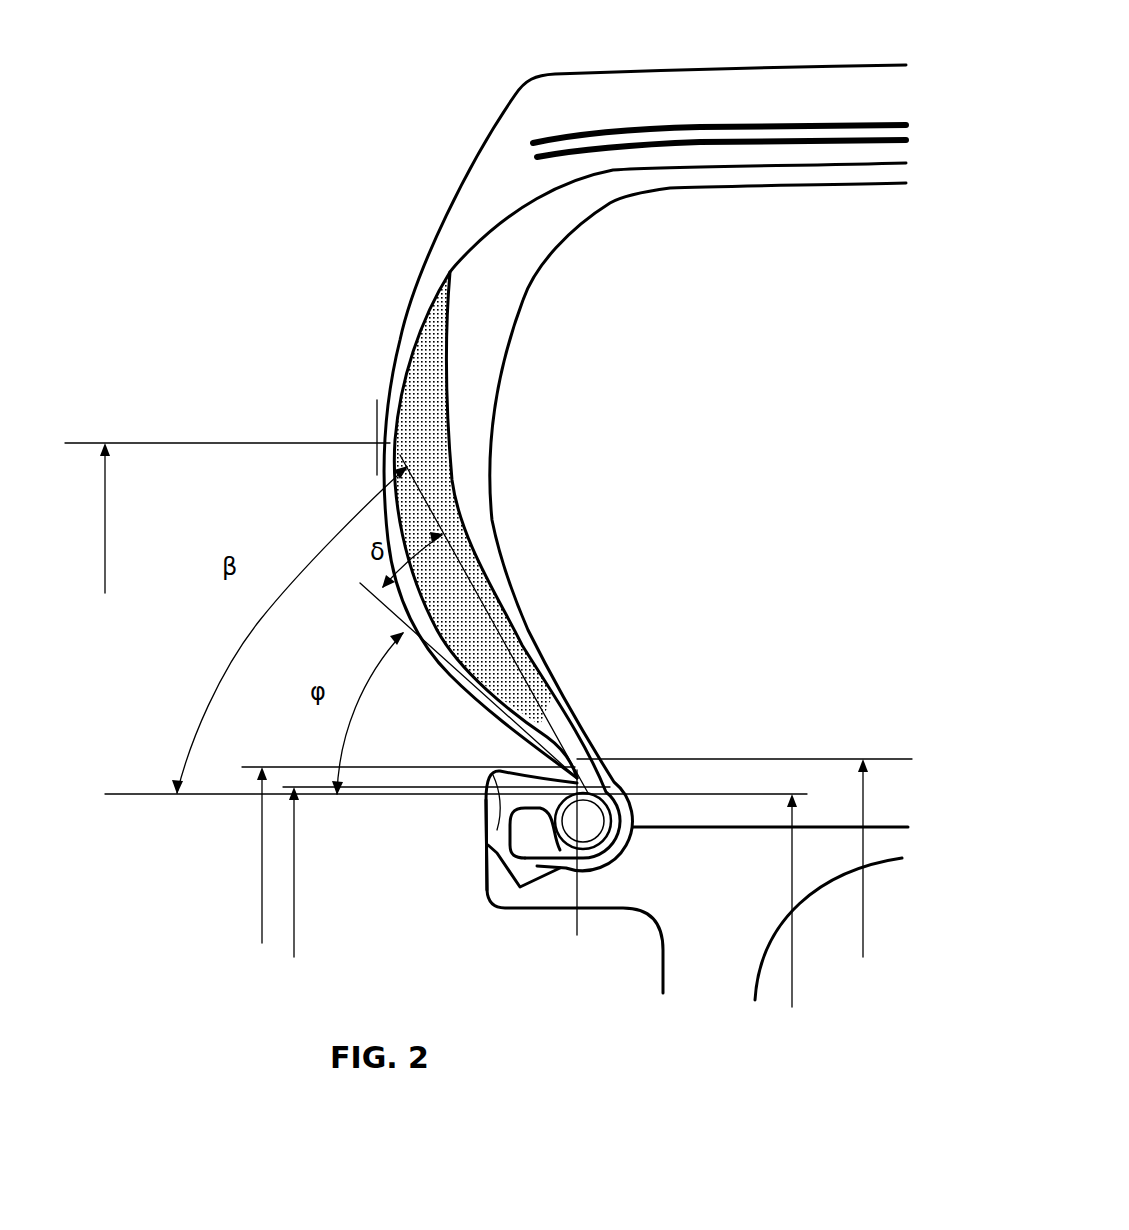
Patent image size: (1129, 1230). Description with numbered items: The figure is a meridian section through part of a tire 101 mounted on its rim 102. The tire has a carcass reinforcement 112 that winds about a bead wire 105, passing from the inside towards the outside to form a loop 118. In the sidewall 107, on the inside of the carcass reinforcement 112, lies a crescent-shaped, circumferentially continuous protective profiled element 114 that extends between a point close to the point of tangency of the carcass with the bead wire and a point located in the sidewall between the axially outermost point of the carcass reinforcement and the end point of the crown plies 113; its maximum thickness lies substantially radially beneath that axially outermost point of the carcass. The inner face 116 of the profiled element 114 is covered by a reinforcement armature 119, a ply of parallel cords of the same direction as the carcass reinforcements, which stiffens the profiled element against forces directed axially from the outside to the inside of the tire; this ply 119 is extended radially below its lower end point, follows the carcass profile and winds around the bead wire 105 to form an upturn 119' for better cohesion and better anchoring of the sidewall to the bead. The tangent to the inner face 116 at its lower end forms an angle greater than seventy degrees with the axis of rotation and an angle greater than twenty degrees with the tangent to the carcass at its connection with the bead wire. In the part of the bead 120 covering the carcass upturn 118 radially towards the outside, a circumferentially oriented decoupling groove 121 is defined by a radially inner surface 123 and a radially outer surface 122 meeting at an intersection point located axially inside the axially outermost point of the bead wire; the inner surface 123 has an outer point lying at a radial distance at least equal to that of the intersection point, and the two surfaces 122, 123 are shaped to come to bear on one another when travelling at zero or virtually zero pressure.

The tire 101 is at (320, 208).
The rim 102 is at (687, 913).
The bead wire 105 is at (660, 794).
The sidewall 107 is at (473, 407).
The carcass reinforcement 112 is at (398, 396).
The crown plies 113 is at (705, 130).
The protective profiled element 114 is at (443, 490).
The inner face 116 is at (487, 533).
The loop 118 is at (487, 867).
The reinforcement armature 119 is at (547, 565).
The upturn 119' is at (524, 903).
The bead 120 is at (493, 775).
The decoupling groove 121 is at (527, 770).
The radially outer surface 122 is at (560, 717).
The radially inner surface 123 is at (533, 760).